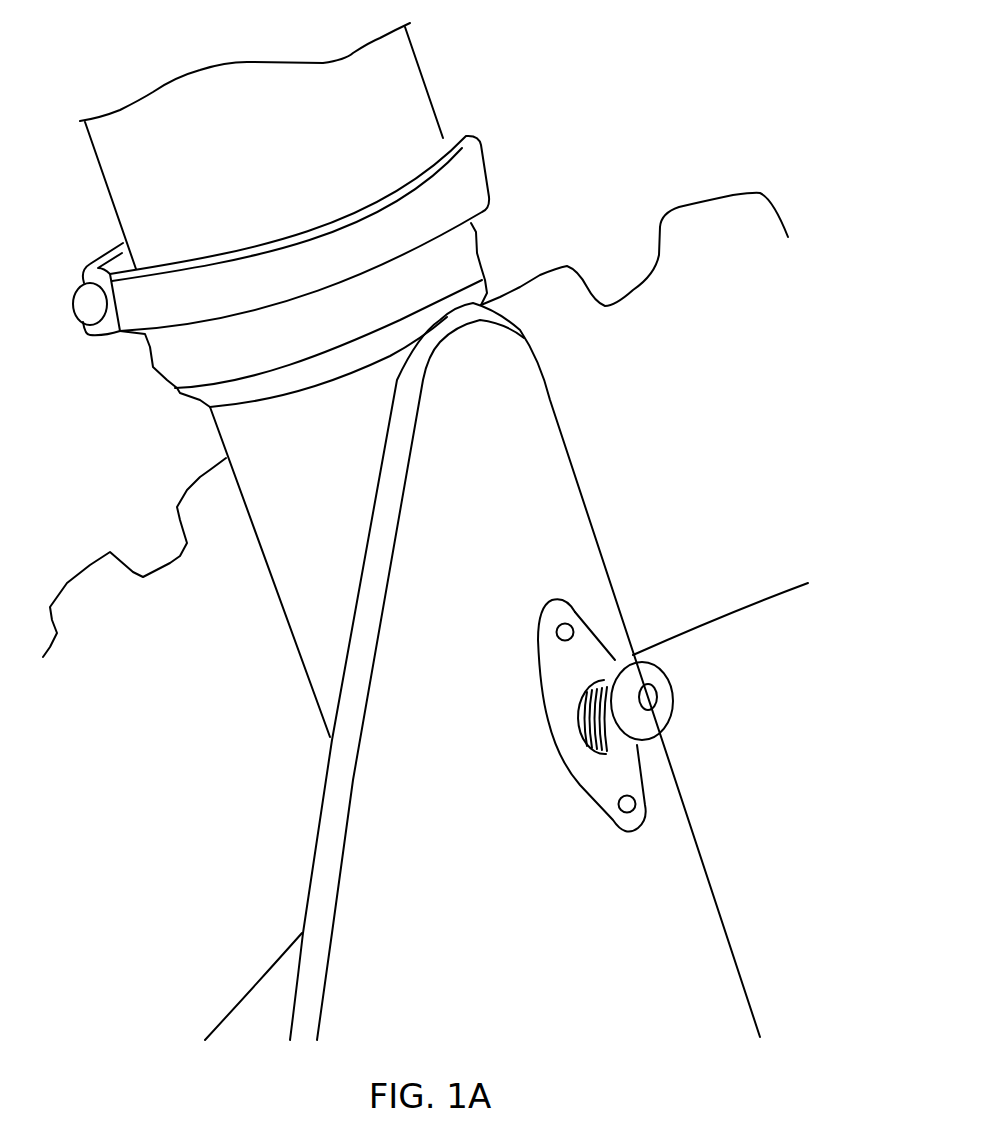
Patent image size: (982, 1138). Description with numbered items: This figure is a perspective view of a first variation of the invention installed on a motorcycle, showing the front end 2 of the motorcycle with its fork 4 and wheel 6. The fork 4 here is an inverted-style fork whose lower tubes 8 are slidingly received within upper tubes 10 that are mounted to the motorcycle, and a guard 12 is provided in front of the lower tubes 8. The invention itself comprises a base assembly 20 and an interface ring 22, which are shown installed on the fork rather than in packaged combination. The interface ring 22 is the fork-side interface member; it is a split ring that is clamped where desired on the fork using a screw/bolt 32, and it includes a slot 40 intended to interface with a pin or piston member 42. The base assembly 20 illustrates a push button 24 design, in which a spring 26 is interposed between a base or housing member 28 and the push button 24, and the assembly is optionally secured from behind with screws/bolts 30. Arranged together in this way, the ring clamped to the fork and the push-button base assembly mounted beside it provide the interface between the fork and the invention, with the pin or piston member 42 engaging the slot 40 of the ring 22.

The front end 2 is at (653, 98).
The fork 4 is at (142, 396).
The wheel 6 is at (753, 323).
The lower tubes 8 is at (290, 452).
The upper tubes 10 is at (167, 222).
The guard 12 is at (415, 552).
The base assembly 20 is at (712, 837).
The interface ring 22 is at (488, 180).
The push button 24 is at (676, 725).
The spring 26 is at (612, 690).
The housing member 28 is at (628, 778).
The screws/bolts 30 is at (564, 641).
The screw/bolt 32 is at (90, 310).
The slot 40 is at (455, 157).
The pin or piston member 42 is at (613, 714).